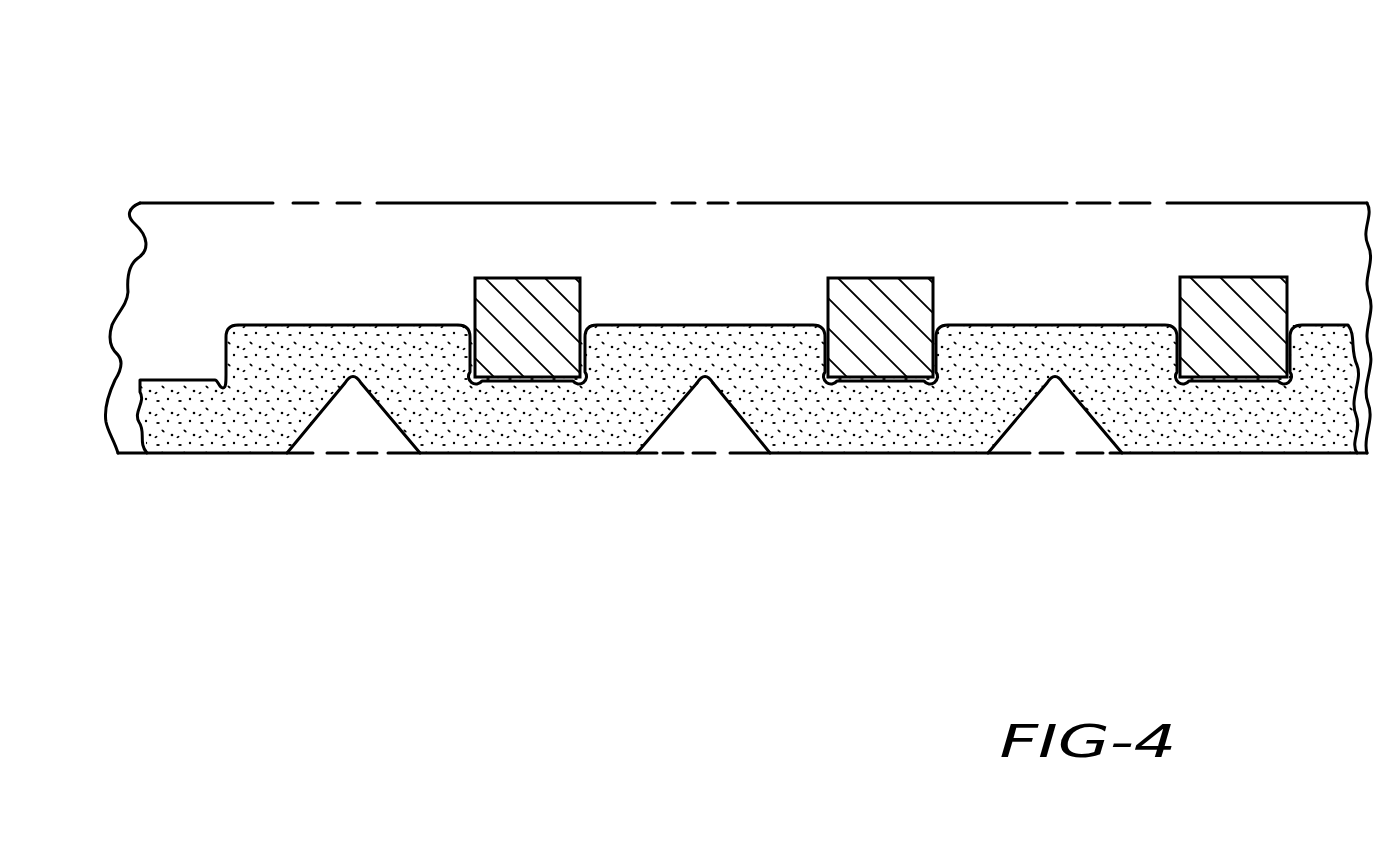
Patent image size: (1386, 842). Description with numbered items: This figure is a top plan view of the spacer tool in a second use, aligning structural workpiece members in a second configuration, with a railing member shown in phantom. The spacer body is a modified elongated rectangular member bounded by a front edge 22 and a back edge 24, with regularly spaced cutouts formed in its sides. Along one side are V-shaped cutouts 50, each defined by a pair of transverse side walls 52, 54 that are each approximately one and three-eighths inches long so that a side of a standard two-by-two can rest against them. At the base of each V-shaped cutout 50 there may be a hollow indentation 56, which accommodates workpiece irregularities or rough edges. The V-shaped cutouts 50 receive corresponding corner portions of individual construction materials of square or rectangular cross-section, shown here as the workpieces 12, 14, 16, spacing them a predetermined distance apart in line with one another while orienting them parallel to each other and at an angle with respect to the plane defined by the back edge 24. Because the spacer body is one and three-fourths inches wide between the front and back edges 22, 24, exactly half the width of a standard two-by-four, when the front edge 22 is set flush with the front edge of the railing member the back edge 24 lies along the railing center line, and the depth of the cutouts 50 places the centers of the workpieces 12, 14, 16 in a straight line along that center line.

The workpiece 12 is at (522, 256).
The workpiece 14 is at (877, 256).
The workpiece 16 is at (1207, 255).
The front edge 22 is at (200, 476).
The back edge 24 is at (353, 303).
The V-shaped cutout 50 is at (346, 439).
The transverse side wall 52 is at (681, 443).
The transverse side wall 54 is at (737, 444).
The hollow indentation 56 is at (701, 405).